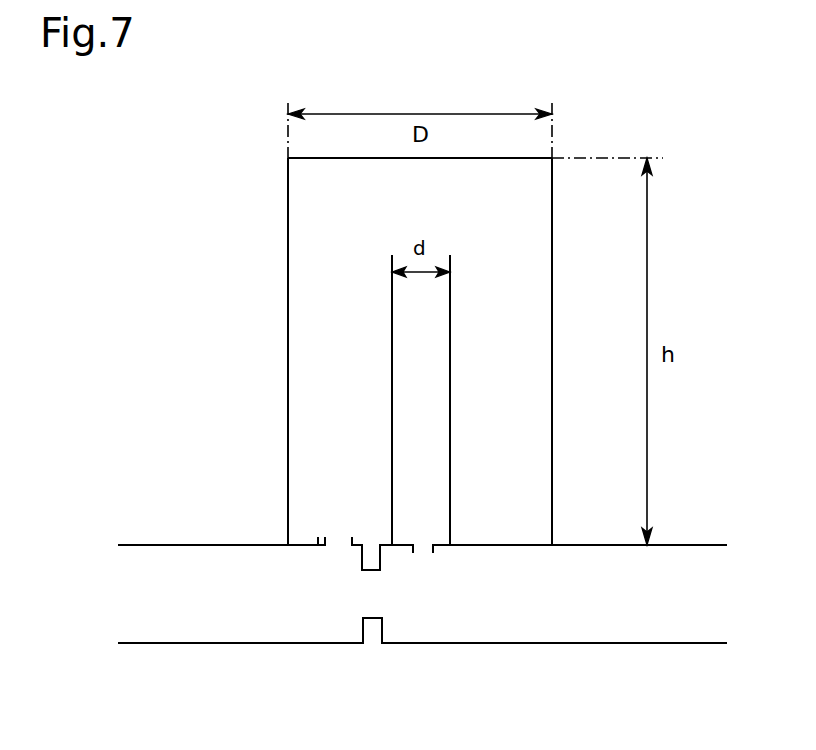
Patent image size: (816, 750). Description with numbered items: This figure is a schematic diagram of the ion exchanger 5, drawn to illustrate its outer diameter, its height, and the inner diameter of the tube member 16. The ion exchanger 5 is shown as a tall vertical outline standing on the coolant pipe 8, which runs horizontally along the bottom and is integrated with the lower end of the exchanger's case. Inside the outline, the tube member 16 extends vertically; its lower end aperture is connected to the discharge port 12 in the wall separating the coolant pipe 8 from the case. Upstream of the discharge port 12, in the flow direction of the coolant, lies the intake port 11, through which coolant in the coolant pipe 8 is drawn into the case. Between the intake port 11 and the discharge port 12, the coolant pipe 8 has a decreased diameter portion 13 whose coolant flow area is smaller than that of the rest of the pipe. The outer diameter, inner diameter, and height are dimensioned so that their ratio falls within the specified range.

The ion exchanger 5 is at (288, 223).
The tube member 16 is at (392, 326).
The coolant pipe 8 is at (177, 545).
The intake port 11 is at (325, 545).
The discharge port 12 is at (433, 545).
The decreased diameter portion 13 is at (362, 628).